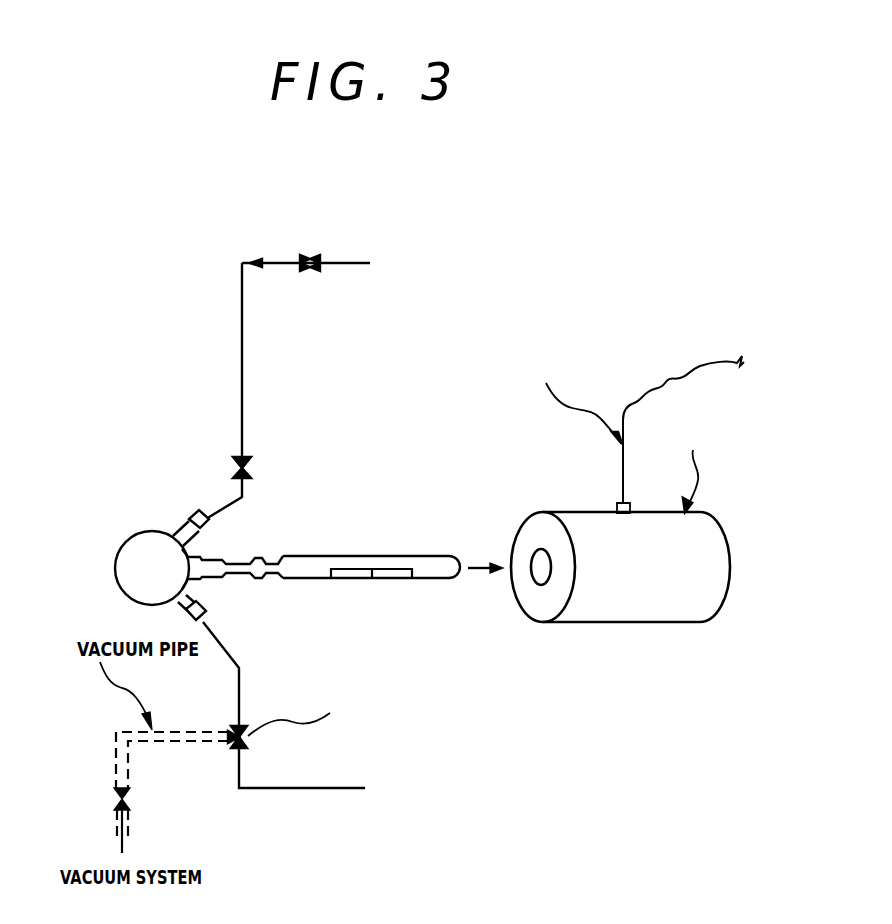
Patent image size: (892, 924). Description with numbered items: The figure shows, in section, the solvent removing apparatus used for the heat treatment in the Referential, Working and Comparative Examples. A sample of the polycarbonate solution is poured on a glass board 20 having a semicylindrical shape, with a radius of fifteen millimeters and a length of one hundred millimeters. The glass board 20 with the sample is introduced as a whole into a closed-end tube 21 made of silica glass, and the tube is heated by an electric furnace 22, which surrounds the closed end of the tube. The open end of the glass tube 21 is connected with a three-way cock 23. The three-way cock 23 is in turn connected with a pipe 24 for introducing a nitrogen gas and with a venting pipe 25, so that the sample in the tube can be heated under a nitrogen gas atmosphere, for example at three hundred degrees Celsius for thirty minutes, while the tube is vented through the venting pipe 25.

The glass board 20 is at (354, 568).
The closed-end tube 21 is at (434, 580).
The electric furnace 22 is at (705, 603).
The three-way cock 23 is at (118, 571).
The pipe for introducing a nitrogen gas 24 is at (242, 367).
The venting pipe 25 is at (240, 668).